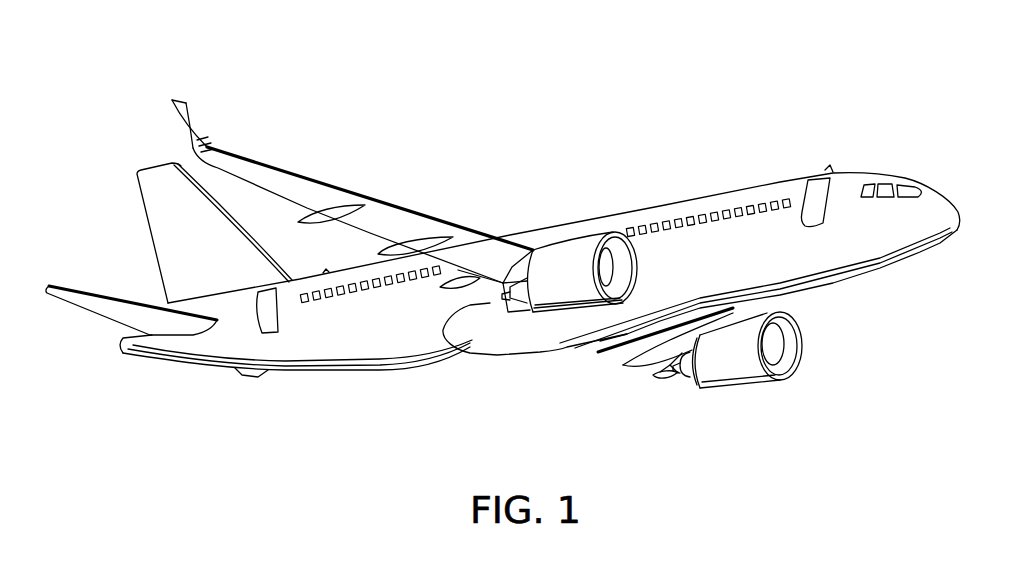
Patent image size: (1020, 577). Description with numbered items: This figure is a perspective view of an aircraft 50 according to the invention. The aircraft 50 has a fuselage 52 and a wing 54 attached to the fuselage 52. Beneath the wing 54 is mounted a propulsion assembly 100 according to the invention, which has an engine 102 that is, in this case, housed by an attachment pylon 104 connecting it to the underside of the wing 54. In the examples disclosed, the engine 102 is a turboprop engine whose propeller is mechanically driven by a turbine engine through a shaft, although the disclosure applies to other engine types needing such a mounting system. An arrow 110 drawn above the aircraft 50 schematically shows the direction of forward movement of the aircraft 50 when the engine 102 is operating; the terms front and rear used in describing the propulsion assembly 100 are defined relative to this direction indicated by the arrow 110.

The aircraft 50 is at (503, 218).
The fuselage 52 is at (662, 215).
The wing 54 is at (398, 222).
The propulsion assembly 100 is at (597, 327).
The engine 102 is at (578, 316).
The attachment pylon 104 is at (512, 267).
The arrow 110 is at (682, 105).